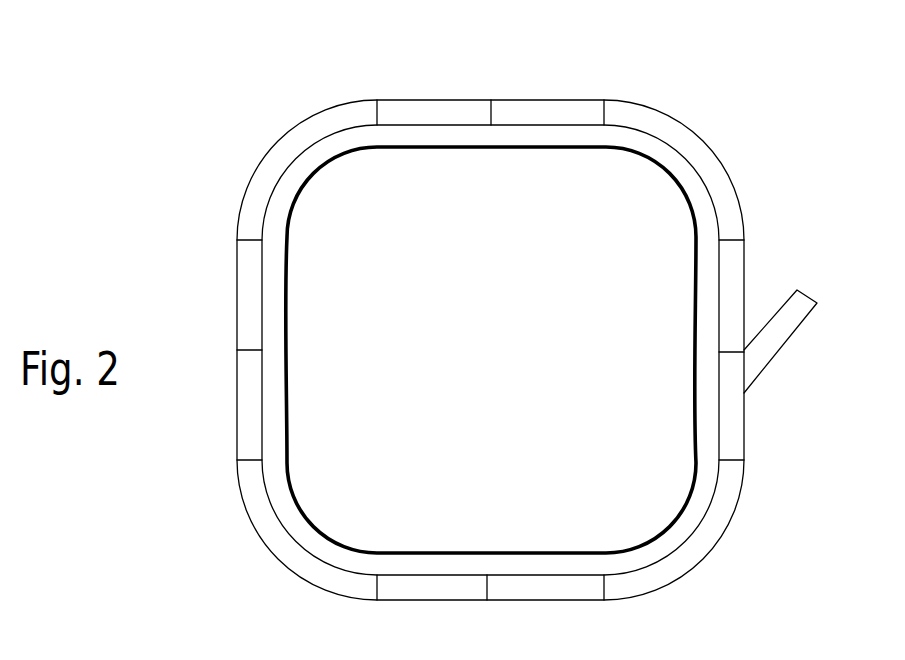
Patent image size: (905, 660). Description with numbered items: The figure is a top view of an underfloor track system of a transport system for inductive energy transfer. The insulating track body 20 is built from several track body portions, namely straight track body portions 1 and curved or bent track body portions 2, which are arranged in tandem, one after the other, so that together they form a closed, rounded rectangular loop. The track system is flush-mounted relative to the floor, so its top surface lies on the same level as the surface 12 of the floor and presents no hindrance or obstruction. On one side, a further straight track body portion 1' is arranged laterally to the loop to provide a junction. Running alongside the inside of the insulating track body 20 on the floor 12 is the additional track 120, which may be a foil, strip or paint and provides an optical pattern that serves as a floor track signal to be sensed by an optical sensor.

The straight track body portion 1 is at (488, 343).
The straight track body portion 1' is at (797, 341).
The curved track body portion 2 is at (293, 138).
The surface of the floor 12 is at (546, 68).
The insulating track body 20 is at (705, 104).
The additional track 120 is at (367, 148).